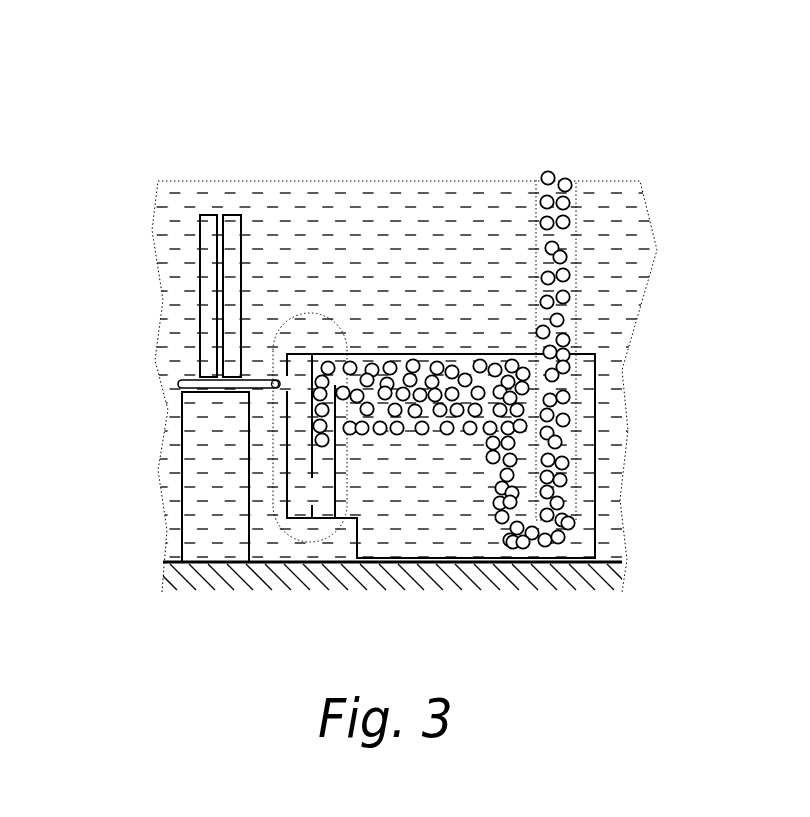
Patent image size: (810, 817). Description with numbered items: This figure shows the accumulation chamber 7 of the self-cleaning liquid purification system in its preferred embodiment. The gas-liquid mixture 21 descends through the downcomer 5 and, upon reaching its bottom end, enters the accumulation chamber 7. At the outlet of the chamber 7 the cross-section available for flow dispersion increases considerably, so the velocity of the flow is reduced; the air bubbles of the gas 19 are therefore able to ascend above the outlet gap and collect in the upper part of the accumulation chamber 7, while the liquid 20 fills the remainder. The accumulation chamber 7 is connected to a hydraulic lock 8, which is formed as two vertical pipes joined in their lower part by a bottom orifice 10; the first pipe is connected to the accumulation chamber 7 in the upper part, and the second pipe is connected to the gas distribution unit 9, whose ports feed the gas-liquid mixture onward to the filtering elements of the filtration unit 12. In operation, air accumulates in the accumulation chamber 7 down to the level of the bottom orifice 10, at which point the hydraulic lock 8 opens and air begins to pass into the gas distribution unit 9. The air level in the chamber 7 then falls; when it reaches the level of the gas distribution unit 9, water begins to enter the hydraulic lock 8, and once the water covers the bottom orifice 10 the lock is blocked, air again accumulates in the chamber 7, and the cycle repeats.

The downcomer 5 is at (577, 213).
The accumulation chamber 7 is at (463, 355).
The hydraulic lock 8 is at (276, 527).
The gas distribution unit 9 is at (248, 377).
The bottom orifice of the hydraulic lock 10 is at (319, 494).
The filtration unit 12 is at (190, 390).
The gas (air) 19 is at (398, 370).
The liquid 20 is at (421, 517).
The gas-liquid mixture 21 is at (563, 332).